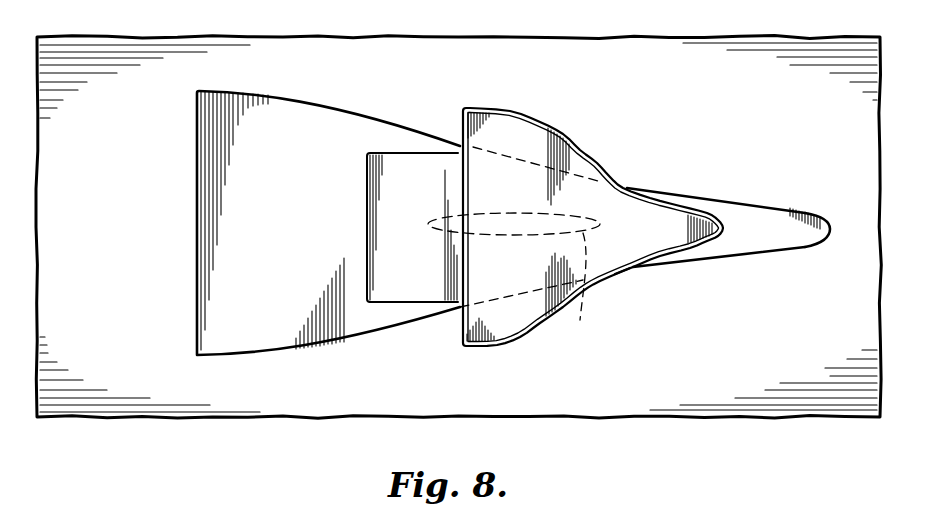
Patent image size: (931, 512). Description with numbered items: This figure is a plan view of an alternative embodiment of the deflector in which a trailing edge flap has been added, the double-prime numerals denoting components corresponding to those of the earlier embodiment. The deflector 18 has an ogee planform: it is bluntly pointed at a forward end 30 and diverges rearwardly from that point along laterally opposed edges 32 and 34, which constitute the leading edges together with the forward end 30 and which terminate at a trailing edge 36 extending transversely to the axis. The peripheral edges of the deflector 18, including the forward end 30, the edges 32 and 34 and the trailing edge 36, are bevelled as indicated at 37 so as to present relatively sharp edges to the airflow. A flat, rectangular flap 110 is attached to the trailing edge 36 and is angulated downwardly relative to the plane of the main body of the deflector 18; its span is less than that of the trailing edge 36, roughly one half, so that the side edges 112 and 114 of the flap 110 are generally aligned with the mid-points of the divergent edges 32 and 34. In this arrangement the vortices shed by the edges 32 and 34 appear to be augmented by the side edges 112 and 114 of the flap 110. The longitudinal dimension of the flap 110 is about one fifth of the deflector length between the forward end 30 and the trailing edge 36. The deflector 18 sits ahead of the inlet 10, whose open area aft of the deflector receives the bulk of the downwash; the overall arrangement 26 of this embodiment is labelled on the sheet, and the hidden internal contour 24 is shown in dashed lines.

The inlet 10 is at (196, 311).
The nozzle assembly 26 is at (133, 250).
The trailing edge flap 110 is at (420, 305).
The side edge of flap 112 is at (412, 151).
The side edge of flap 114 is at (380, 304).
The trailing edge 36 is at (458, 120).
The deflector 18 is at (553, 149).
The inner body (hidden) 24 is at (515, 279).
The bevel 37 is at (621, 273).
The forward end 30 is at (727, 234).
The laterally opposed edge 32 is at (659, 200).
The laterally opposed edge 34 is at (660, 262).